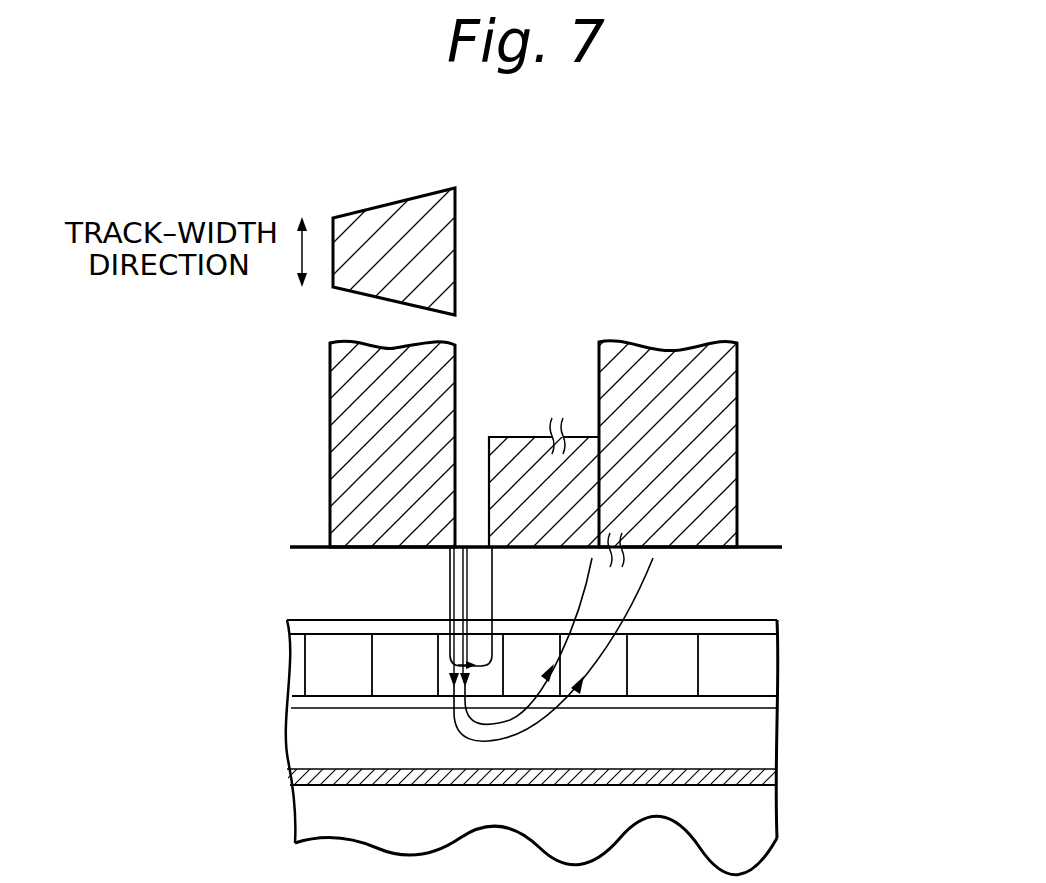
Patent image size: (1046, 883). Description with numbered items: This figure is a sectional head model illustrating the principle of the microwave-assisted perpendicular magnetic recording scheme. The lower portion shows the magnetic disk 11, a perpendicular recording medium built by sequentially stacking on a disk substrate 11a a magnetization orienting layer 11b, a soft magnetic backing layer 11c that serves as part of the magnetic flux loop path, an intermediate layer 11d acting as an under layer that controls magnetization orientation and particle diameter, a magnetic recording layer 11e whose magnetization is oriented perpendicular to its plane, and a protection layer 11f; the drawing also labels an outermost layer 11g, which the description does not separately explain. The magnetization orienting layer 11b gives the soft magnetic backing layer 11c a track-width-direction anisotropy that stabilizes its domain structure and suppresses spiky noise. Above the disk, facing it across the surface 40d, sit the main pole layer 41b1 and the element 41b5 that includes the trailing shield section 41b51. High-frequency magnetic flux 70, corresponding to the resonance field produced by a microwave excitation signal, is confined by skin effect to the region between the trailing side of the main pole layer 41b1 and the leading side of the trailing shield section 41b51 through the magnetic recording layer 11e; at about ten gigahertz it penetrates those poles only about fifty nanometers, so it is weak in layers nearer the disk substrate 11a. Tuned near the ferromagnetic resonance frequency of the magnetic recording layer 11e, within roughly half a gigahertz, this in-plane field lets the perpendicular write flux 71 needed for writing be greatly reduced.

The main pole layer 41b1 is at (396, 237).
The second pole piece portion 41b5 is at (703, 362).
The trailing shield section 41b51 is at (597, 503).
The medium facing surface 40d is at (760, 548).
The magnetic flux 70 is at (447, 587).
The magnetic flux 71 is at (460, 720).
The magnetic disk 11 is at (621, 725).
The disk substrate 11a is at (585, 814).
The magnetization orienting layer 11b is at (770, 777).
The soft magnetic backing layer 11c is at (753, 738).
The intermediate layer 11d is at (770, 703).
The magnetic recording layer 11e is at (765, 663).
The protection layer 11f is at (765, 628).
The lubricant layer 11g is at (720, 620).